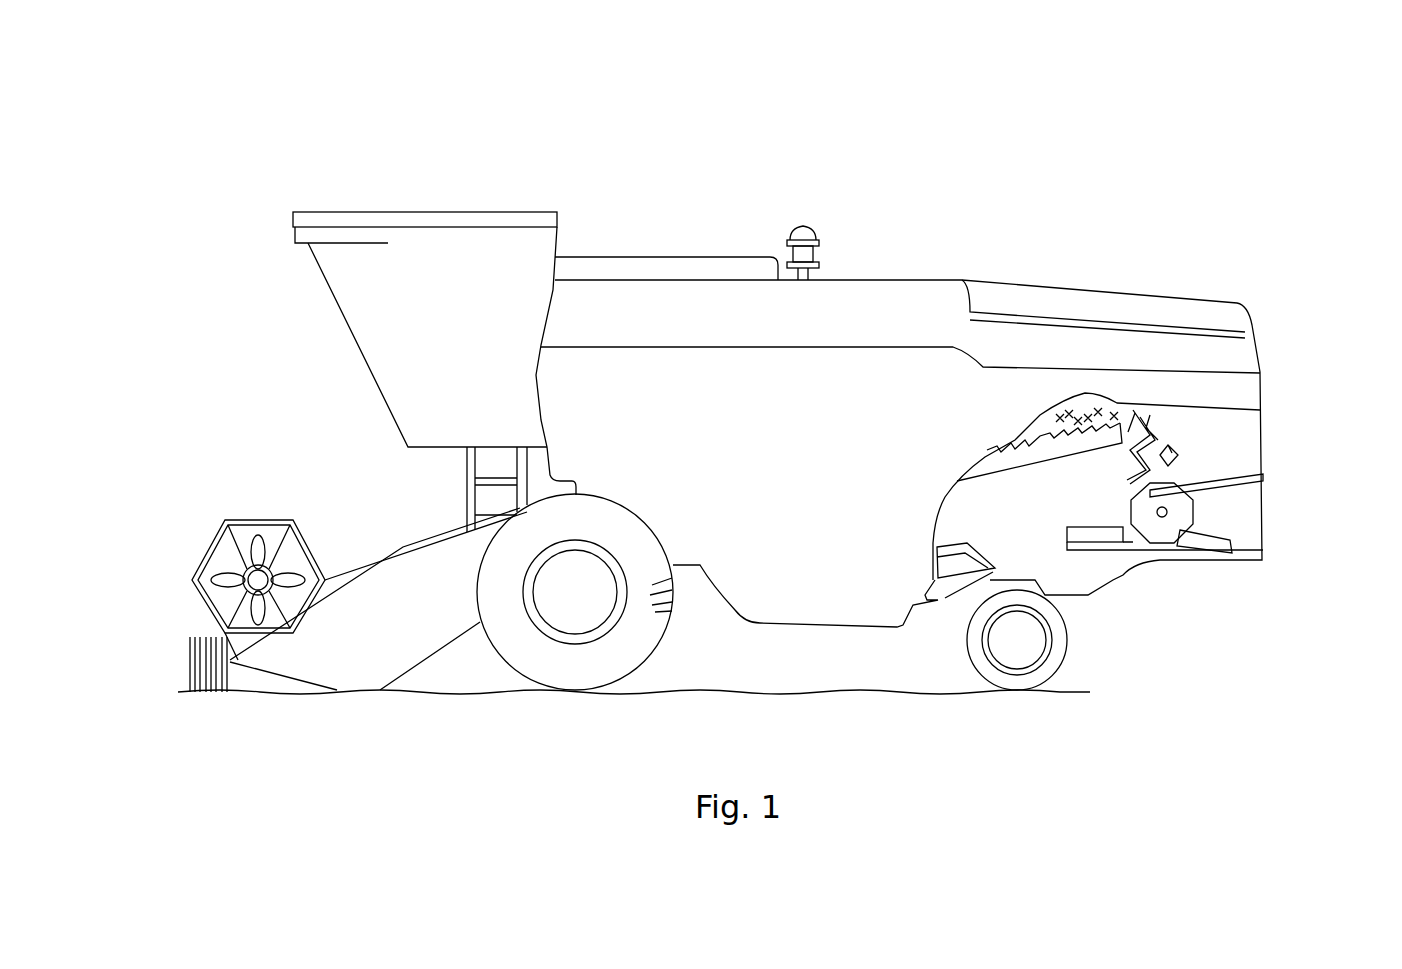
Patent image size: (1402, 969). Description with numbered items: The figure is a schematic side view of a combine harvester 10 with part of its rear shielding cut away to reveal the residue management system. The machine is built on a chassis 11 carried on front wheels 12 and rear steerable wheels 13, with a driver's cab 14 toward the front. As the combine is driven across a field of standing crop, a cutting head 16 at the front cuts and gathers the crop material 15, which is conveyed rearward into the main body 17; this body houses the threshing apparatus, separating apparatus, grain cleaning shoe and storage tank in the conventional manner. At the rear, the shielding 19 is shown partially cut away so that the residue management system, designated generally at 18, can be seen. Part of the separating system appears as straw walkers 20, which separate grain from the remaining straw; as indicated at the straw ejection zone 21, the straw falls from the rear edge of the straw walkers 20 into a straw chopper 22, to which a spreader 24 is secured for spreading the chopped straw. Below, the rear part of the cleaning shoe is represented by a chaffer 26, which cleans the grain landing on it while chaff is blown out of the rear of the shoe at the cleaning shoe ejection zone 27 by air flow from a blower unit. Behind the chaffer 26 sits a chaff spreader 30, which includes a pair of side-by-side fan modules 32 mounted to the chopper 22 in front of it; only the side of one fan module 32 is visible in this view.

The combine harvester 10 is at (287, 167).
The chassis 11 is at (823, 630).
The front wheels 12 is at (660, 643).
The rear steerable wheels 13 is at (968, 659).
The driver's cab 14 is at (448, 212).
The crop material 15 is at (877, 280).
The cutting head 16 is at (367, 610).
The main body 17 is at (780, 452).
The residue management system 18 is at (1185, 580).
The shielding 19 is at (1263, 428).
The straw walkers 20 is at (1052, 452).
The straw ejection zone 21 is at (1130, 417).
The straw chopper 22 is at (1158, 543).
The spreader 24 is at (1230, 548).
The chaffer 26 is at (948, 572).
The cleaning shoe ejection zone 27 is at (955, 522).
The chaff spreader 30 is at (1082, 535).
The fan modules 32 is at (1105, 530).